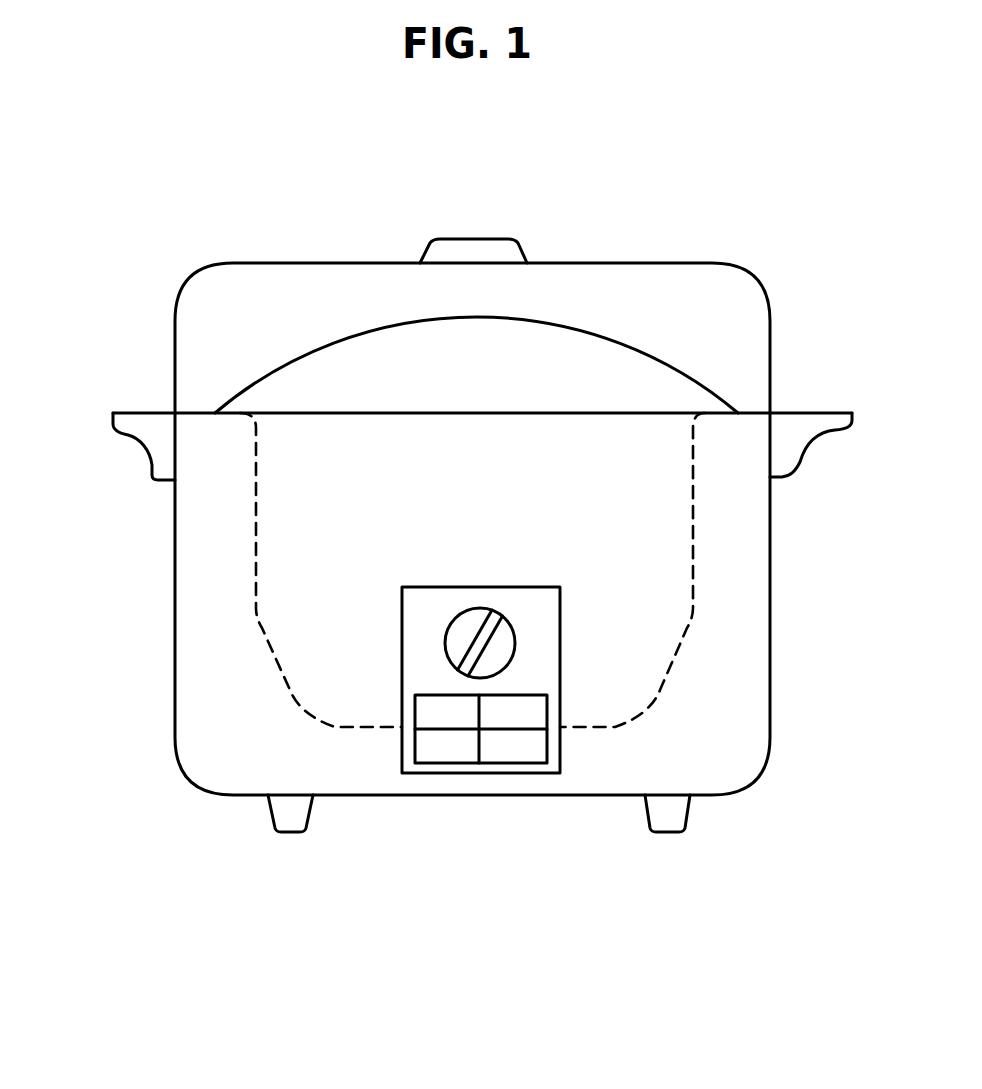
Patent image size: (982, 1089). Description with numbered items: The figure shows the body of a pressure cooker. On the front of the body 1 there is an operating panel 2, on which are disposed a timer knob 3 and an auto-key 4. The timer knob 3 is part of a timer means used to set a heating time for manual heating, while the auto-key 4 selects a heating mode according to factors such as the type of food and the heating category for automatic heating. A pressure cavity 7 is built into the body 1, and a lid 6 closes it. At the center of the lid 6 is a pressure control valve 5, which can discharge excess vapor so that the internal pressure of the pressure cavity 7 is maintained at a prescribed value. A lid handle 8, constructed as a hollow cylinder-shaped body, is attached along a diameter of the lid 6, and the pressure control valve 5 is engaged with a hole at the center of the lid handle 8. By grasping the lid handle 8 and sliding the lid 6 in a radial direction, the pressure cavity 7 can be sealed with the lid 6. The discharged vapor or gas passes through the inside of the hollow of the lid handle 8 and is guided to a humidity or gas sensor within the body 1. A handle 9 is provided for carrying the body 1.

The body 1 is at (210, 708).
The operating panel 2 is at (545, 647).
The timer knob 3 is at (470, 650).
The auto-key 4 is at (513, 748).
The pressure control valve 5 is at (480, 245).
The lid 6 is at (580, 365).
The pressure cavity 7 is at (670, 665).
The lid handle 8 is at (297, 278).
The handle 9 is at (147, 444).